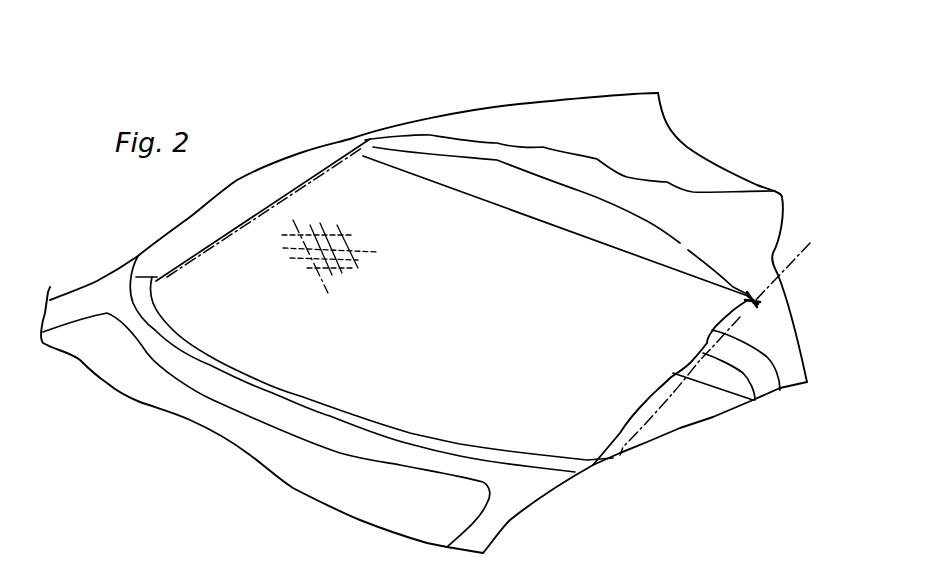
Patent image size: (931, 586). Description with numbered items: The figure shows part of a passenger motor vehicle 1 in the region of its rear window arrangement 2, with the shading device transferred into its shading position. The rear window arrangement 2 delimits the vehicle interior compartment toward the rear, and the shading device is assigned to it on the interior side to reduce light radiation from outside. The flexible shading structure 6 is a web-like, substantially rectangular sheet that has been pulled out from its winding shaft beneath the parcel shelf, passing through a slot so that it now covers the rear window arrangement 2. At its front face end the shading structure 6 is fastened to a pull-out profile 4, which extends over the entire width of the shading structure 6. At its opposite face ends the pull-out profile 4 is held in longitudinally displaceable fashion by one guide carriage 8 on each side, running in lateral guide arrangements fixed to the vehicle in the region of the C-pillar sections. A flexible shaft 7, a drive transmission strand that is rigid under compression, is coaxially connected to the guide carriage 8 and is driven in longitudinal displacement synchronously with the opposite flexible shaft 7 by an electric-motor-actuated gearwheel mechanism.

The passenger motor vehicle 1 is at (570, 88).
The rear window arrangement 2 is at (218, 212).
The pull-out profile 4 is at (548, 223).
The flexible shading structure 6 is at (455, 340).
The flexible shaft 7 is at (272, 200).
The guide carriage 8 is at (765, 302).